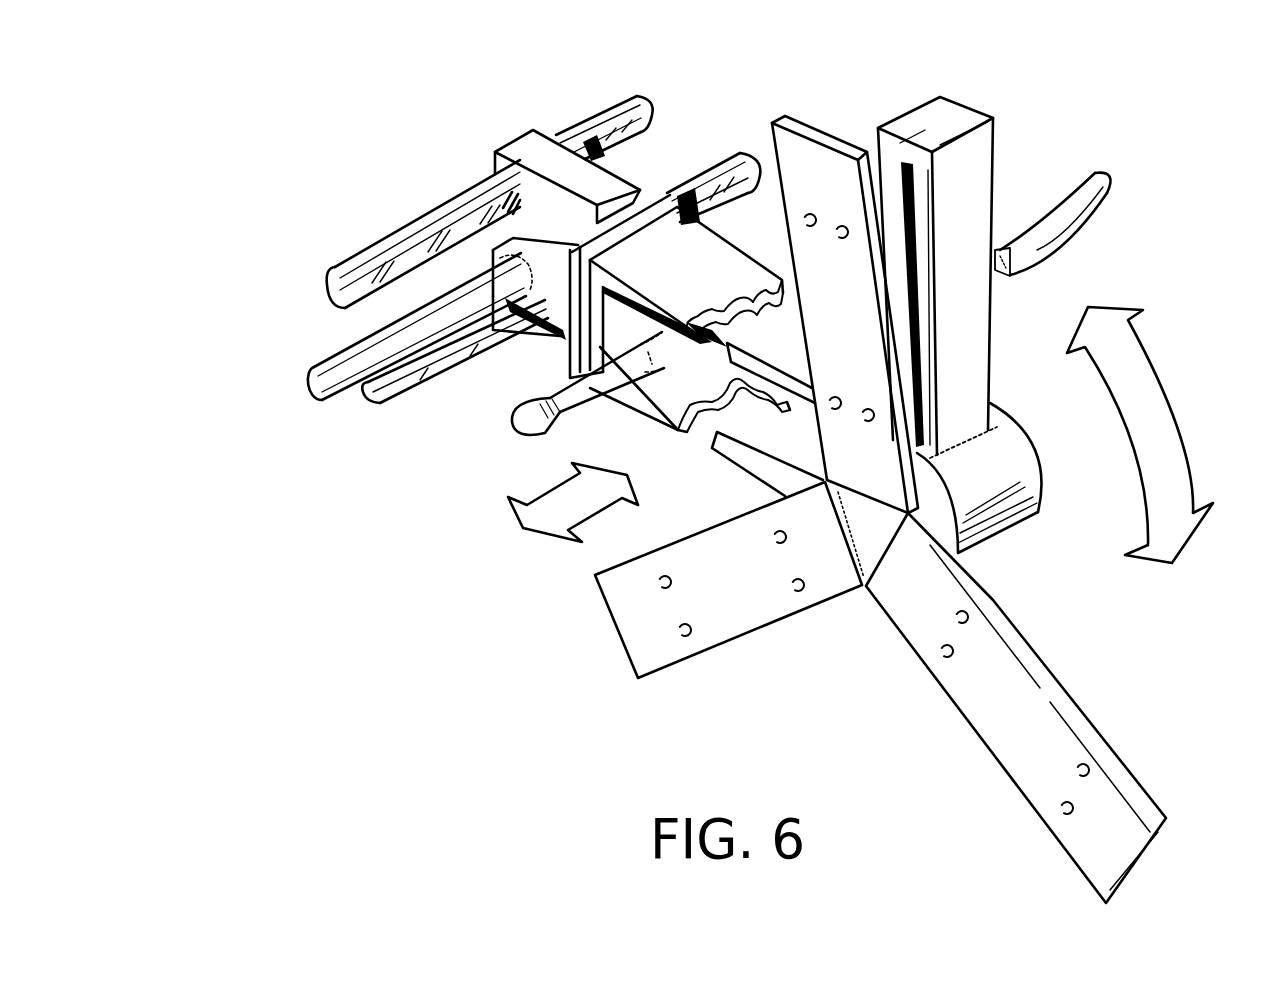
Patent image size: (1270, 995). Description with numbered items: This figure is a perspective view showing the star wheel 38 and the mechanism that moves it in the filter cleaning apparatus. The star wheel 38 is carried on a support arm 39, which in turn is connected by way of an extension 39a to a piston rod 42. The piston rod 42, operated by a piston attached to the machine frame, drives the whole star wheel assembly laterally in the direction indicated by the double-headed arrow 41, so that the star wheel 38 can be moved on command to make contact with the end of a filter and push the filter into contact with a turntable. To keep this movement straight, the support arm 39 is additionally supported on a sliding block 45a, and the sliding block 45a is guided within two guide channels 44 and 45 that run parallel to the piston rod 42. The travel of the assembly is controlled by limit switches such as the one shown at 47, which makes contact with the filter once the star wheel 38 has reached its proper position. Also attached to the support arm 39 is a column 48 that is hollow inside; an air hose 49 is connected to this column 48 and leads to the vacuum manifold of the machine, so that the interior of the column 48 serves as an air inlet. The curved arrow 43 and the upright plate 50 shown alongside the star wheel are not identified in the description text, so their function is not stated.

The star wheel 38 is at (605, 583).
The support arm 39 is at (712, 253).
The extension 39a is at (550, 330).
The arrow 41 is at (535, 538).
The piston rod 42 is at (350, 353).
The pivoting direction arrow 43 is at (1168, 403).
The guide channel 44 is at (397, 238).
The guide channel 45 is at (382, 407).
The sliding block 45a is at (530, 150).
The limit switch 47 is at (533, 440).
The column 48 is at (957, 113).
The air hose 49 is at (1052, 222).
The pivoting board 50 is at (880, 165).